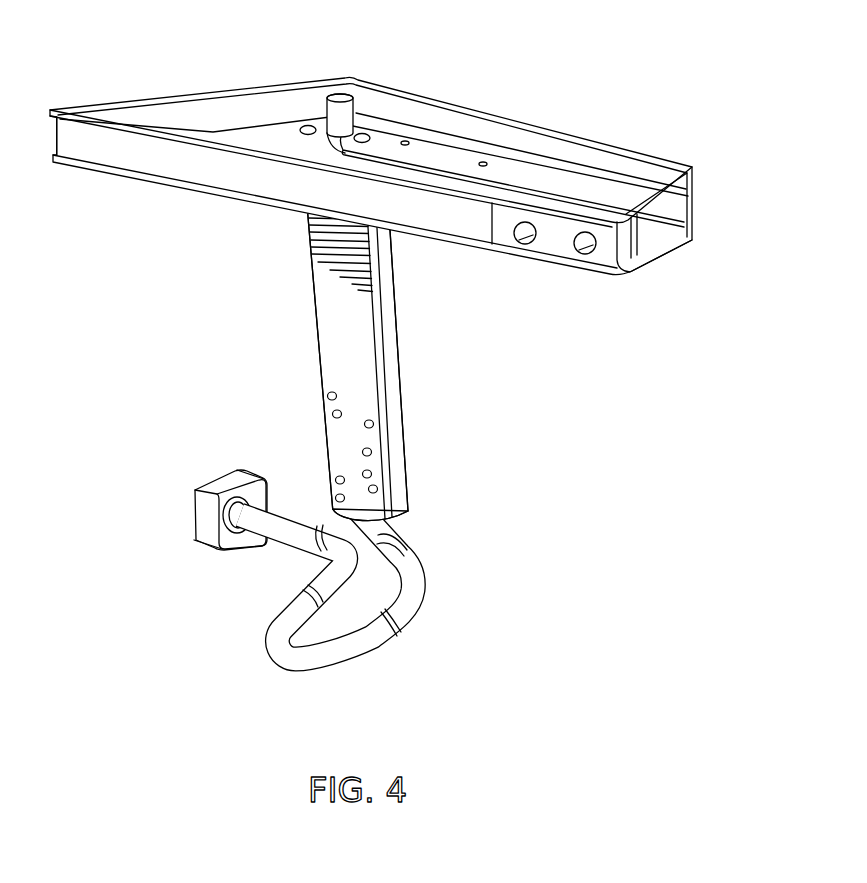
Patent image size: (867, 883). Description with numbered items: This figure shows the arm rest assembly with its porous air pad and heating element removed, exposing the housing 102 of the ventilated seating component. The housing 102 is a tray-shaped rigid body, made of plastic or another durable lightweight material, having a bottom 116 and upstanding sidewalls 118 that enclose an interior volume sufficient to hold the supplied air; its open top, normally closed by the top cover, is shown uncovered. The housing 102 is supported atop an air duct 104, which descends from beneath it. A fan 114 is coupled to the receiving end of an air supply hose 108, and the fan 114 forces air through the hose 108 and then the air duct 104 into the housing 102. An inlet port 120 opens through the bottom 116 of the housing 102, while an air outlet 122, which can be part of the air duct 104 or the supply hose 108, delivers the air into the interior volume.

The housing 102 is at (647, 157).
The air duct 104 is at (318, 351).
The air supply hose 108 is at (428, 570).
The fan 114 is at (220, 473).
The bottom 116 is at (460, 160).
The upstanding sidewalls 118 is at (185, 118).
The inlet port 120 is at (357, 133).
The air outlet 122 is at (333, 110).